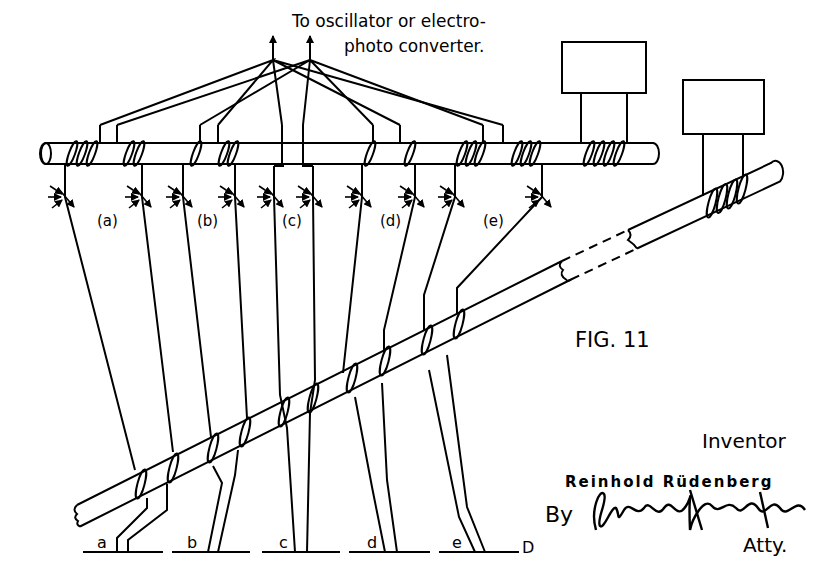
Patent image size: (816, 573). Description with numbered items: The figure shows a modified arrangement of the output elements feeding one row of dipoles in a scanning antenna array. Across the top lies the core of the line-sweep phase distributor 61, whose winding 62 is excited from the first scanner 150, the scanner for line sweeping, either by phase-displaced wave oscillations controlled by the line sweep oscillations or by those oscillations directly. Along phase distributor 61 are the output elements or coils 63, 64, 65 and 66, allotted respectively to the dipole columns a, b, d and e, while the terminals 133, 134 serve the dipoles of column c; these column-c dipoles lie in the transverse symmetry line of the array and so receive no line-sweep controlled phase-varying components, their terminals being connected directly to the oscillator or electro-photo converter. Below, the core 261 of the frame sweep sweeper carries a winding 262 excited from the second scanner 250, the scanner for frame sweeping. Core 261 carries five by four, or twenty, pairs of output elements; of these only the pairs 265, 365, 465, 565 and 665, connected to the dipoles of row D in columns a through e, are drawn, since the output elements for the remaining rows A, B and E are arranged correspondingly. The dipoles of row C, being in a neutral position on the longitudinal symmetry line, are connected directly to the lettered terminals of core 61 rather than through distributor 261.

The phase distributor 61 is at (55, 152).
The winding 62 is at (585, 165).
The output coil 63 is at (86, 167).
The output coil 64 is at (220, 181).
The output coil 65 is at (398, 181).
The output coil 66 is at (476, 168).
The terminal 133 is at (301, 100).
The terminal 134 is at (300, 100).
The first scanner 150 is at (604, 92).
The second scanner 250 is at (723, 138).
The core of frame sweep distributor 261 is at (679, 216).
The winding 262 is at (719, 207).
The pair of output elements 265 is at (157, 471).
The pair of output elements 365 is at (229, 433).
The pair of output elements 465 is at (299, 395).
The pair of output elements 565 is at (369, 359).
The pair of output elements 665 is at (443, 325).